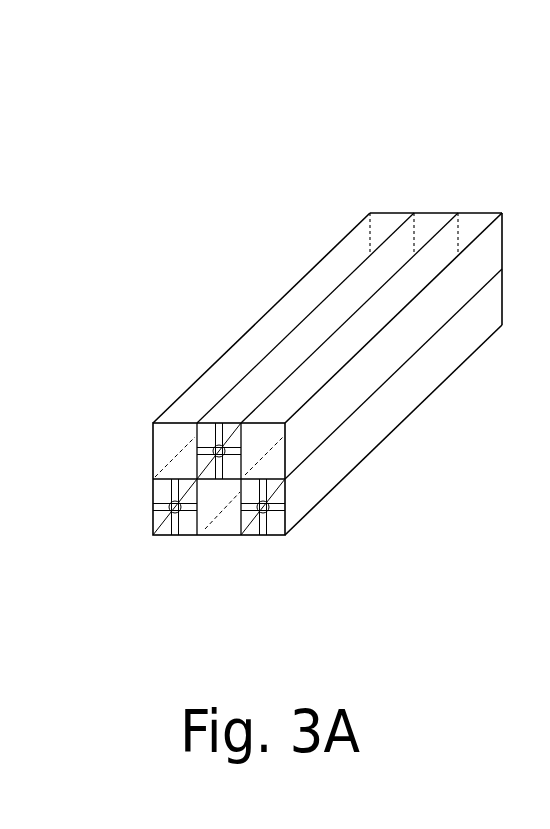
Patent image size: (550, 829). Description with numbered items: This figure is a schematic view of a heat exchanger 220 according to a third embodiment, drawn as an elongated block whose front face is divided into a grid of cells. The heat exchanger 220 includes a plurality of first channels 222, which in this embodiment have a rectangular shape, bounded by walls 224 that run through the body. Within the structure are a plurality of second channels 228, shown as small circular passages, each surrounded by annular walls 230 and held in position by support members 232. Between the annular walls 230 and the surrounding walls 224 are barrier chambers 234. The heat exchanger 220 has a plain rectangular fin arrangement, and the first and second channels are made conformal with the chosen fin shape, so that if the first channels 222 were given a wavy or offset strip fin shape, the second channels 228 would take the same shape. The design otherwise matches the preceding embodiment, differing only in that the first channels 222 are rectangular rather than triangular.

The heat exchanger 220 is at (410, 175).
The plurality of first channels 222 is at (213, 491).
The walls 224 is at (155, 480).
The plurality of second channels 228 is at (223, 443).
The annular walls 230 is at (240, 522).
The support members 232 is at (265, 522).
The barrier chambers 234 is at (228, 427).